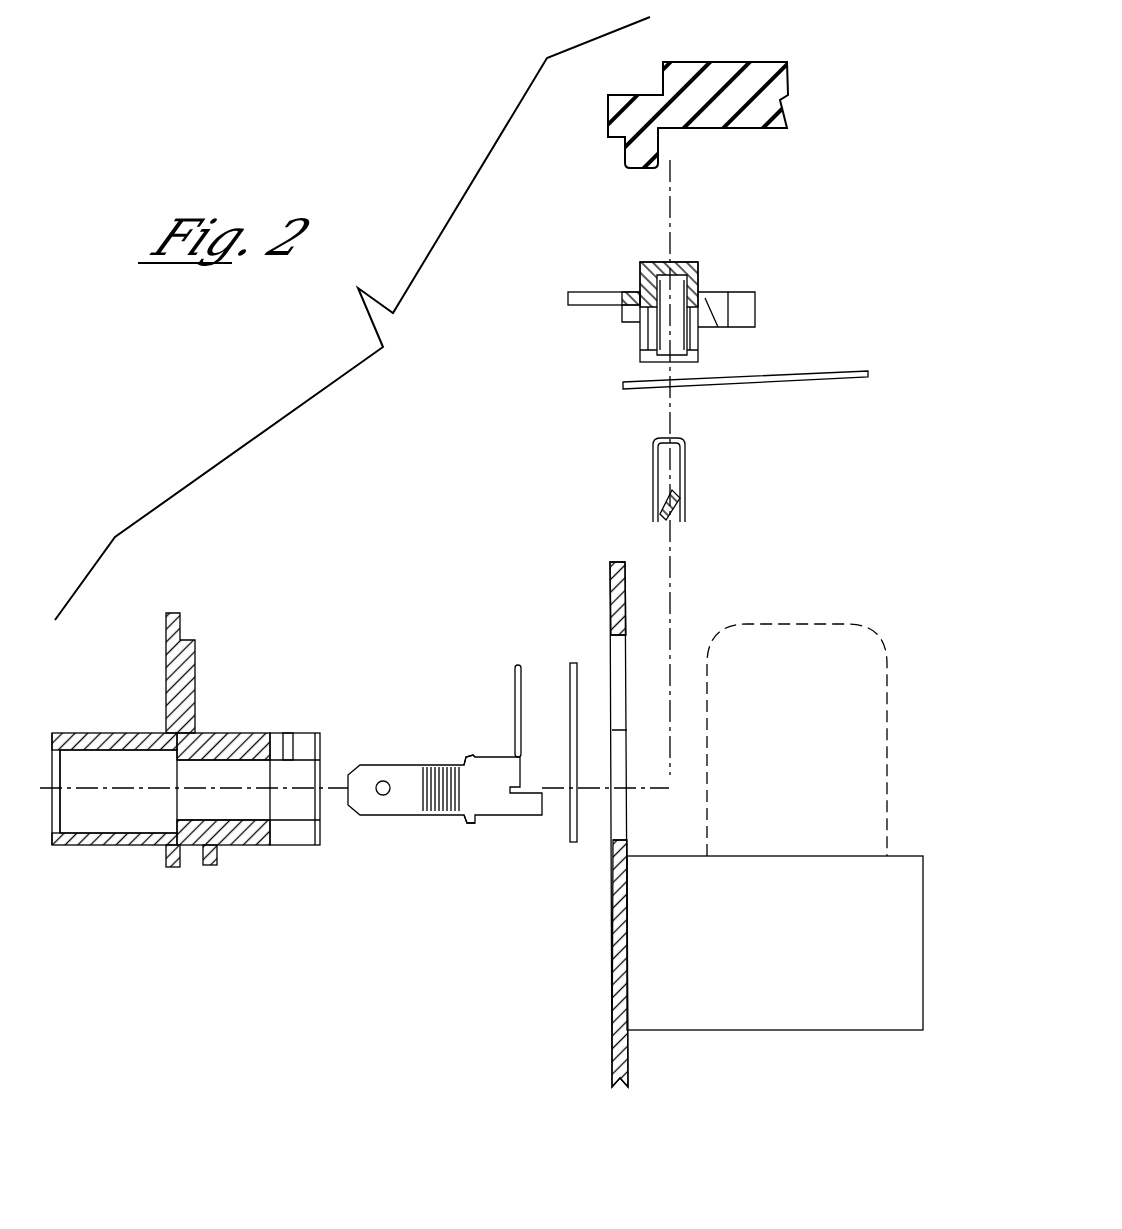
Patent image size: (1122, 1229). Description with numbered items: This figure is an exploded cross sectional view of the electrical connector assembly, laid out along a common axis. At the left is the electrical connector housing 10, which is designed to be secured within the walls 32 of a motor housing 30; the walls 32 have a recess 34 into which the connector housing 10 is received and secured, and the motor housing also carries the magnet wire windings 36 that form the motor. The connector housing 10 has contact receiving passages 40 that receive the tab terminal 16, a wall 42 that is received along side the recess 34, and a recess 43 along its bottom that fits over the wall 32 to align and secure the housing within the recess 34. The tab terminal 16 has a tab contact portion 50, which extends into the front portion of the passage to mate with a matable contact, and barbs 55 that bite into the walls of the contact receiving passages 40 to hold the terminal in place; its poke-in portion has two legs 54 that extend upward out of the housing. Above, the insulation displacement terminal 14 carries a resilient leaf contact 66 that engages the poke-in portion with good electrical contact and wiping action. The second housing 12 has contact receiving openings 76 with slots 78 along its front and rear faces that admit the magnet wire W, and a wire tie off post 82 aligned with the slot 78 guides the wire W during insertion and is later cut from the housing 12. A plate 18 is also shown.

The electrical connector housing 10 is at (186, 756).
The second housing 12 is at (699, 286).
The insulation displacement terminal 14 is at (651, 476).
The tab terminal 16 is at (445, 743).
The plate 18 is at (570, 656).
The motor housing 30 is at (580, 806).
The walls 32 is at (612, 981).
The recess 34 is at (617, 820).
The magnet wire windings 36 is at (838, 642).
The contact receiving passages 40 is at (102, 818).
The wall 42 is at (198, 652).
The recess 43 is at (192, 860).
The tab contact portion 50 is at (410, 800).
The legs 54 is at (527, 712).
The barbs 55 is at (478, 756).
The leaf contact 66 is at (676, 497).
The contact receiving openings 76 is at (675, 336).
The slots 78 is at (700, 312).
The wire tie off post 82 is at (583, 290).
The magnet wire W is at (745, 385).